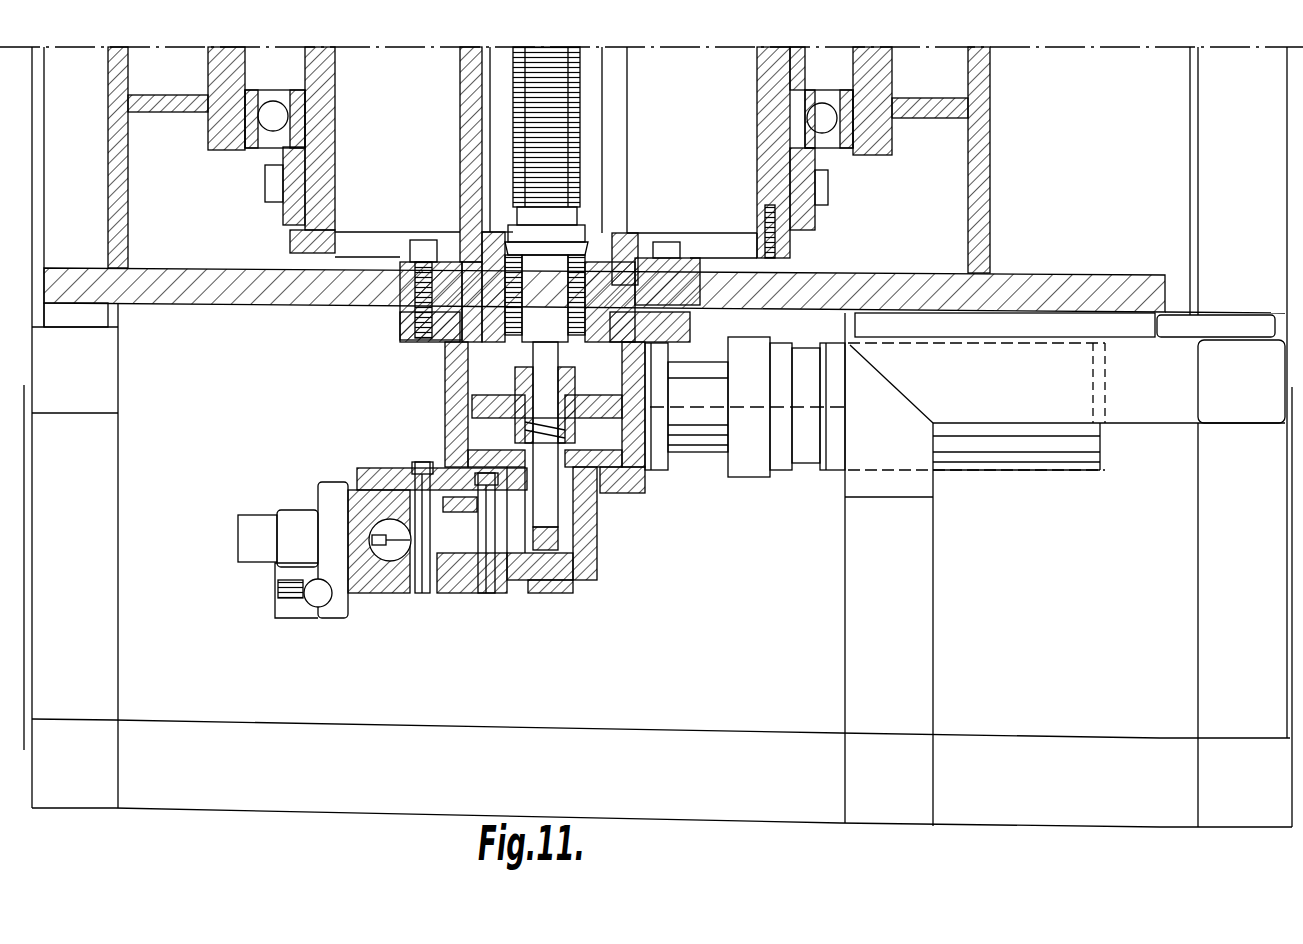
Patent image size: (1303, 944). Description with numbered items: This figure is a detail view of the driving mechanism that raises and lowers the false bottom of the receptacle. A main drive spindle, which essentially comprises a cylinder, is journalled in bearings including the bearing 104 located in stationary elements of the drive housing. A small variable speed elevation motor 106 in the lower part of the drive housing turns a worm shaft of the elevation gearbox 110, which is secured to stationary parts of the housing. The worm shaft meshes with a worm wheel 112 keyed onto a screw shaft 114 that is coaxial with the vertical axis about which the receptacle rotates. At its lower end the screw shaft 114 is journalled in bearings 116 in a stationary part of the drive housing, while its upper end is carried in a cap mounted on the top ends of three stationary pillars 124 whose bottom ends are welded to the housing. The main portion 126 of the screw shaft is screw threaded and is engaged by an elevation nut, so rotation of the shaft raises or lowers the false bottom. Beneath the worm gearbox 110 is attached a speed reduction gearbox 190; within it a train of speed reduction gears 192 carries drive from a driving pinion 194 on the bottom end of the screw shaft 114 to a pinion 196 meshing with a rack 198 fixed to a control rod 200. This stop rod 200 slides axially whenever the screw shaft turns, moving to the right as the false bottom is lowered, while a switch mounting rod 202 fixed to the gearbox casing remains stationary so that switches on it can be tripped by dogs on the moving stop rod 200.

The bearing 104 is at (845, 93).
The elevation motor 106 is at (828, 470).
The elevation gearbox 110 is at (445, 437).
The worm wheel 112 is at (470, 405).
The screw shaft 114 is at (600, 270).
The bearings 116 is at (490, 283).
The stationary pillars 124 is at (458, 127).
The screw threaded main portion 126 is at (580, 115).
The speed reduction gearbox 190 is at (600, 557).
The train of speed reduction gears 192 is at (392, 497).
The driving pinion 194 is at (600, 537).
The pinion 196 is at (478, 592).
The rack 198 is at (412, 592).
The control rod 200 is at (388, 532).
The switch mounting rod 202 is at (323, 597).